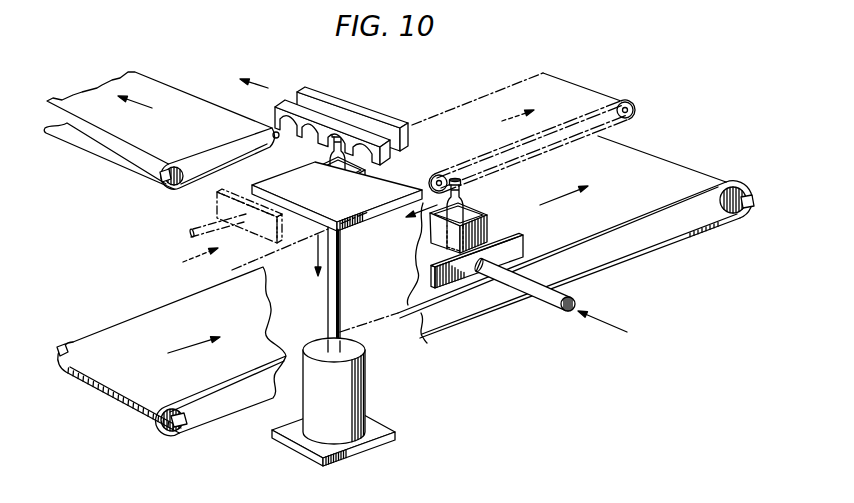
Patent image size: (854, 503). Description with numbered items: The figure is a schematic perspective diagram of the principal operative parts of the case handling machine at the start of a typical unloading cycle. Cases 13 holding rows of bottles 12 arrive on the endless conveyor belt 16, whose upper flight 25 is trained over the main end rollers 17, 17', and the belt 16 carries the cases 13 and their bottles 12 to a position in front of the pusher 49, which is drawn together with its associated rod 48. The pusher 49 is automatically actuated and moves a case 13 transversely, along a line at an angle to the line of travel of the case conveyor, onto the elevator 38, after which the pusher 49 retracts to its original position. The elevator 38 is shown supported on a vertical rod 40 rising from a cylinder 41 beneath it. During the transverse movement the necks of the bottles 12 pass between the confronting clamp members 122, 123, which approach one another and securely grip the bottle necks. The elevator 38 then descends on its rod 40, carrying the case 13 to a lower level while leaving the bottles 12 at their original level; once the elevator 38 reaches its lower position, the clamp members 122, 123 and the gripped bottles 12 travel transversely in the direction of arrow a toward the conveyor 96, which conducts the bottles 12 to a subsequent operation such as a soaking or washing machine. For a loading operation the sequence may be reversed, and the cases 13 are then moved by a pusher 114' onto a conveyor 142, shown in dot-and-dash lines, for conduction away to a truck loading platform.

The bottle 12 is at (463, 208).
The case 13 is at (487, 226).
The endless conveyor belt 16 is at (171, 371).
The end roller 17 is at (171, 442).
The end roller 17' is at (737, 221).
The upper flight 25 is at (547, 251).
The elevator 38 is at (390, 182).
The piston rod 40 is at (333, 300).
The cylinder 41 is at (352, 393).
The pusher rod 48 is at (528, 285).
The pusher 49 is at (517, 250).
The conveyor 96 is at (161, 130).
The pusher 114' is at (222, 225).
The clamp member 122 is at (327, 118).
The clamp member 123 is at (370, 118).
The conveyor 142 is at (596, 86).
The arrow a is at (260, 75).